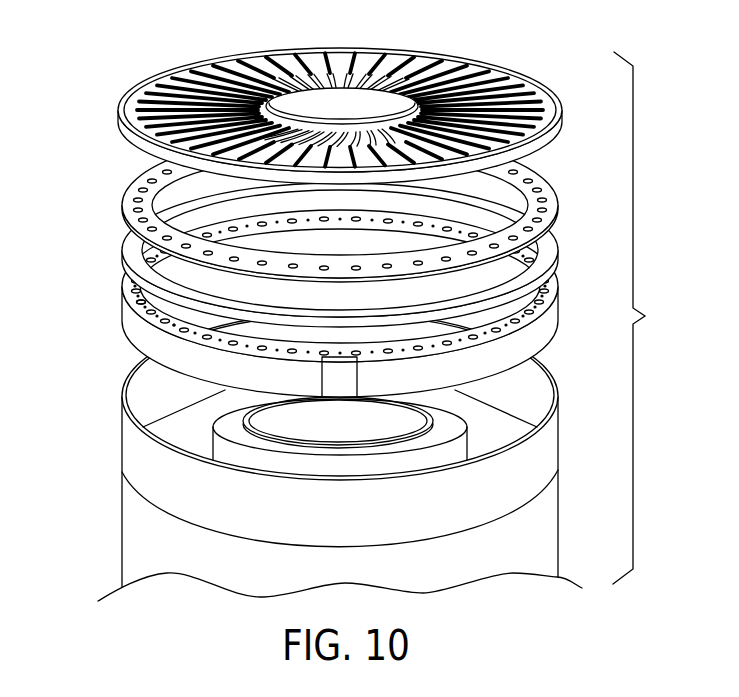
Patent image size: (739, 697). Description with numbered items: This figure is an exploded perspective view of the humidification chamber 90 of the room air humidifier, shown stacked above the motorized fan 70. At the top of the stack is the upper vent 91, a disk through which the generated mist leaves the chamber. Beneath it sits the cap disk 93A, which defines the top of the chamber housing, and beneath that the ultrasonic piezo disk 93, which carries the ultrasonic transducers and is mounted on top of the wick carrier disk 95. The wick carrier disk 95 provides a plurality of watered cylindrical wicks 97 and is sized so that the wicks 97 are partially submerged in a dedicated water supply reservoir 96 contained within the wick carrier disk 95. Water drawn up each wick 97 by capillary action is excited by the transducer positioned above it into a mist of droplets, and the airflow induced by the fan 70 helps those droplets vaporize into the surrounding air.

The motorized fan 70 is at (510, 427).
The humidification chamber 90 is at (648, 318).
The upper vent 91 is at (465, 63).
The ultrasonic piezo disk 93 is at (138, 252).
The cap disk 93A is at (137, 186).
The wick carrier disk 95 is at (125, 308).
The water supply reservoir 96 is at (176, 330).
The watered cylindrical wick 97 is at (138, 304).